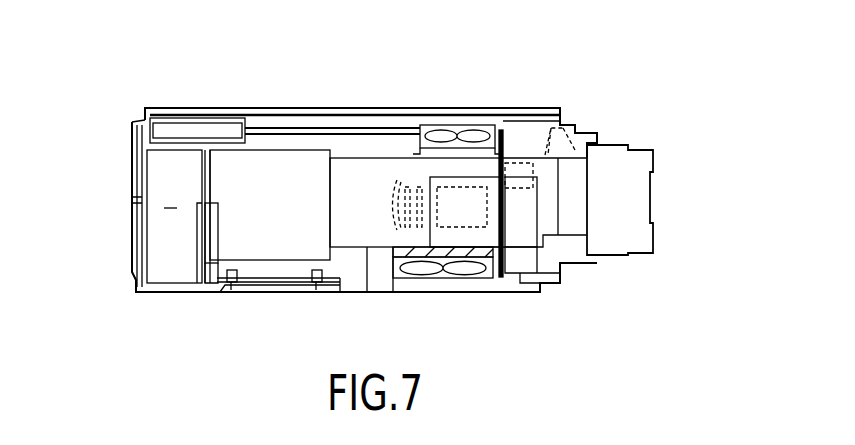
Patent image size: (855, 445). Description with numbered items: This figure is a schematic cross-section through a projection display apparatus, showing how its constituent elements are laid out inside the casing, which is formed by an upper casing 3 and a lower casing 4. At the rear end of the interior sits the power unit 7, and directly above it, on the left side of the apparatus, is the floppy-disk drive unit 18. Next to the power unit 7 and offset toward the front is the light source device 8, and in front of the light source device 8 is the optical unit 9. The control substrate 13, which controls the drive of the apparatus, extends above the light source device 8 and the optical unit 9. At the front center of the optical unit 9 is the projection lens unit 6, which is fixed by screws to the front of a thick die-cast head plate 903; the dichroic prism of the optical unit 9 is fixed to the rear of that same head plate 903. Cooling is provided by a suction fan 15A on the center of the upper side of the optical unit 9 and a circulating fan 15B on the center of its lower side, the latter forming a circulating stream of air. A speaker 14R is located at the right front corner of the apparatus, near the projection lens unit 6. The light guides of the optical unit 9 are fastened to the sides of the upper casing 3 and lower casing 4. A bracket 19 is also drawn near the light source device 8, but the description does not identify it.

The upper casing 3 is at (168, 108).
The lower casing 4 is at (180, 290).
The projection lens unit 6 is at (657, 143).
The power unit 7 is at (174, 216).
The light source device 8 is at (241, 167).
The optical unit 9 is at (376, 155).
The control substrate 13 is at (301, 129).
The speaker 14R is at (566, 149).
The suction fan 15A is at (446, 132).
The circulating fan 15B is at (420, 278).
The floppy-disk drive unit 18 is at (158, 128).
The lamp holder bracket 19 is at (220, 240).
The head plate 903 is at (545, 155).